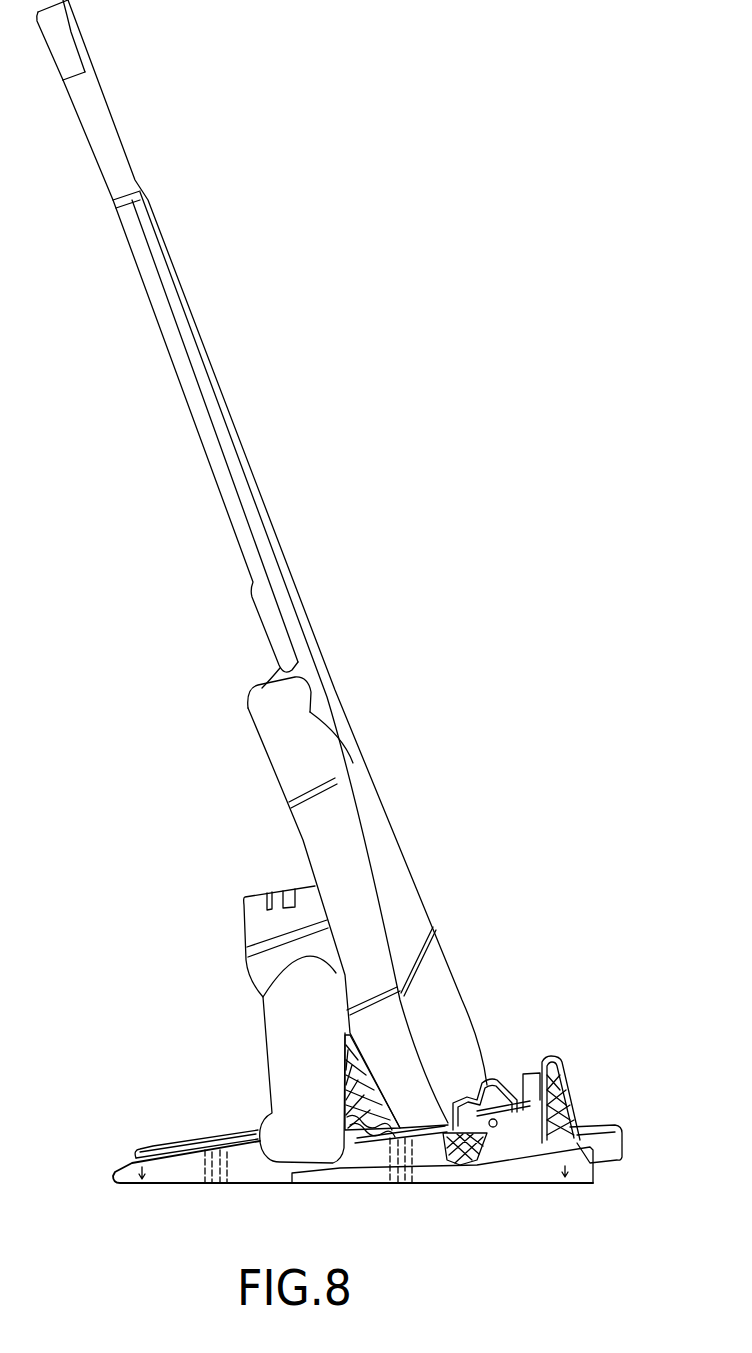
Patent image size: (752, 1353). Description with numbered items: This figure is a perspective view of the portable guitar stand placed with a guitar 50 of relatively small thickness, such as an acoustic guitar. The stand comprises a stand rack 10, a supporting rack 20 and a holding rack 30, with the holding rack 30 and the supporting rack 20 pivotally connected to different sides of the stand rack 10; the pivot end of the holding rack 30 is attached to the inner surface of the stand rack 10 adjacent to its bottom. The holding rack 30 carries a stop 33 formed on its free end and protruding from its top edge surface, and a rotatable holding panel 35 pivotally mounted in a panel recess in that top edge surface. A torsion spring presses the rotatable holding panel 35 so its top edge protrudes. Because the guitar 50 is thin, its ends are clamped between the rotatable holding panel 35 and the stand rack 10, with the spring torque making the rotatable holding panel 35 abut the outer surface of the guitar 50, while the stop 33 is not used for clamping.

The stand rack 10 is at (262, 1016).
The supporting rack 20 is at (193, 1152).
The holding rack 30 is at (564, 1190).
The stop 33 is at (566, 1050).
The rotatable holding panel 35 is at (500, 1070).
The guitar 50 is at (248, 737).